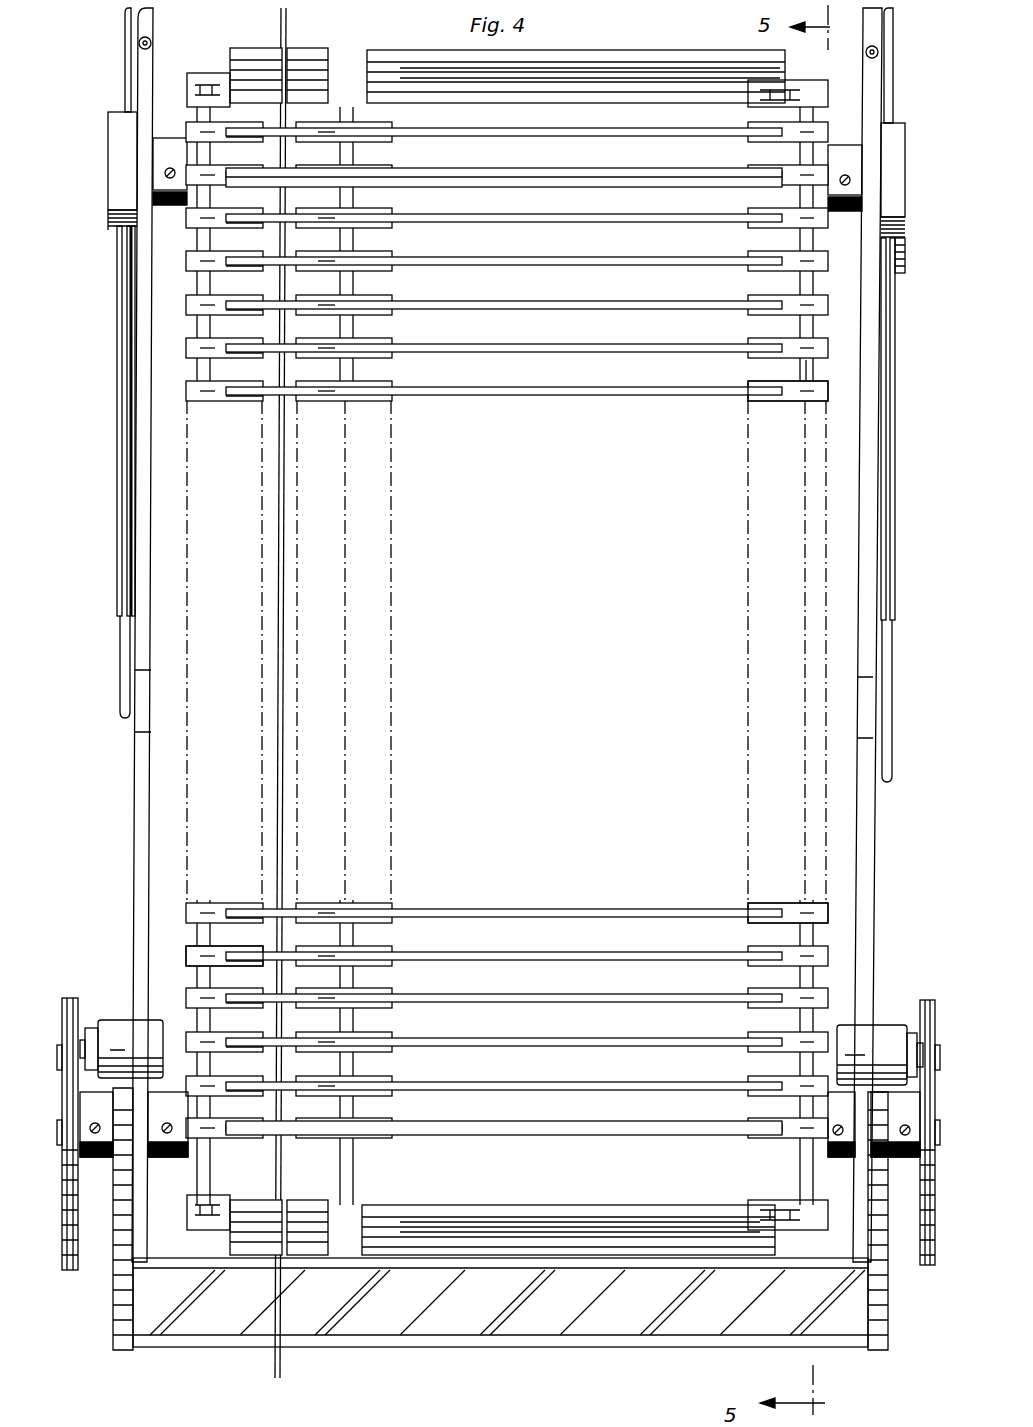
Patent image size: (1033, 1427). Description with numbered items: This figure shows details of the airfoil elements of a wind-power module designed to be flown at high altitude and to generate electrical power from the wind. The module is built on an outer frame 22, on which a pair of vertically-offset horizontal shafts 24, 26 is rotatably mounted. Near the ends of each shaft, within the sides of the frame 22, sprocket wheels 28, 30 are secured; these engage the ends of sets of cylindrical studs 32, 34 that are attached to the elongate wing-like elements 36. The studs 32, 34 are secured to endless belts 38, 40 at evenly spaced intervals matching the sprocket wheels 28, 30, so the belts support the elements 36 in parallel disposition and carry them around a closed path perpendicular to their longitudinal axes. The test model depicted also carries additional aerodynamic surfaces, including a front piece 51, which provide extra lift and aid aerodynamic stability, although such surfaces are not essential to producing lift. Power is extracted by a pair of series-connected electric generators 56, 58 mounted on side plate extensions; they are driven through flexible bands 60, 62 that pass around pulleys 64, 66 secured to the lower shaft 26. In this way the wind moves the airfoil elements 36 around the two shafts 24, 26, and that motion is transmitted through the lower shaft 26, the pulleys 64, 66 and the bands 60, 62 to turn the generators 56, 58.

The outer frame 22 is at (137, 760).
The horizontal shaft 24 is at (595, 172).
The horizontal shaft 26 is at (528, 1118).
The sprocket wheel 28 is at (188, 255).
The sprocket wheel 30 is at (810, 250).
The cylindrical stud 32 is at (187, 120).
The cylindrical stud 34 is at (828, 95).
The wing-like element 36 is at (455, 258).
The endless belt 38 is at (205, 371).
The endless belt 40 is at (812, 375).
The front piece 51 is at (395, 1345).
The electric generator 56 is at (112, 1020).
The electric generator 58 is at (890, 1025).
The flexible band 60 is at (935, 1020).
The flexible band 62 is at (62, 1010).
The pulley 64 is at (62, 1225).
The pulley 66 is at (935, 1225).